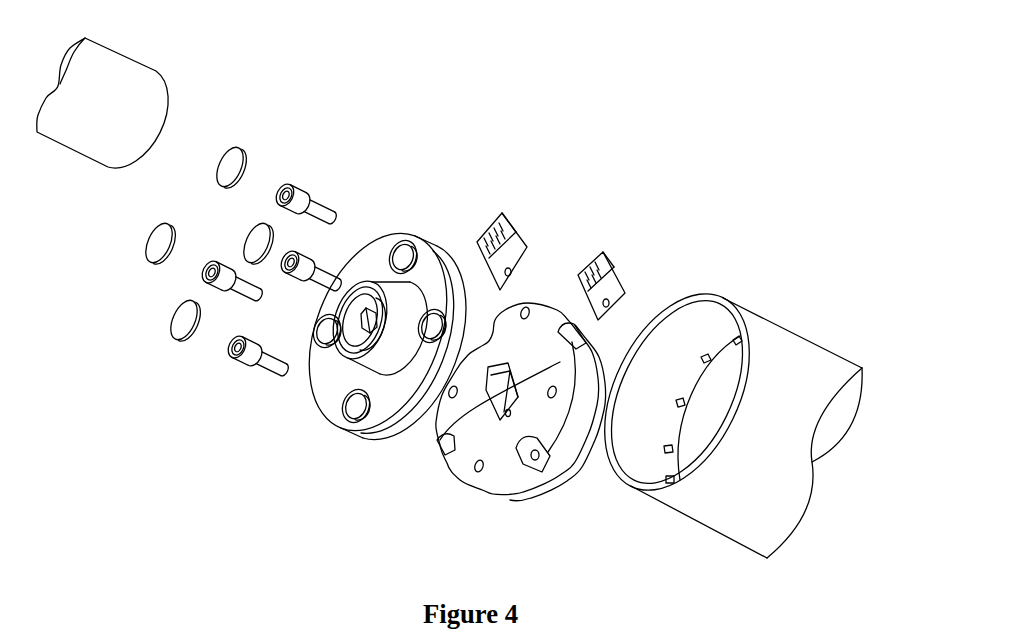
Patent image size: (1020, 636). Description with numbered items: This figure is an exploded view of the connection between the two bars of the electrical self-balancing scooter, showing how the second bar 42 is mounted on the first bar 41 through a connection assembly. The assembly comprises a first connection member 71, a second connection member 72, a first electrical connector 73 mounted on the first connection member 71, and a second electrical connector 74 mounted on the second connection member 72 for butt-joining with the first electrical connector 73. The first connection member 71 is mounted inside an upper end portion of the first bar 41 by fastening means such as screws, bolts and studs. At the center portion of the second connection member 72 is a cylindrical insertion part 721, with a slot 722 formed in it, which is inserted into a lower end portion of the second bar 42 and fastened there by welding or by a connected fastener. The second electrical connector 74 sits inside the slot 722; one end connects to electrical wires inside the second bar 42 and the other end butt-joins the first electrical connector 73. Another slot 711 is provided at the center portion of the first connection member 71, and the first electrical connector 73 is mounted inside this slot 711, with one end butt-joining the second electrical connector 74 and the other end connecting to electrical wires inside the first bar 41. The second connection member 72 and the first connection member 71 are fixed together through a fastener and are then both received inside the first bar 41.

The first bar 41 is at (772, 350).
The second bar 42 is at (128, 77).
The first connection member 71 is at (577, 405).
The slot 711 is at (482, 395).
The second connection member 72 is at (430, 263).
The cylindrical insertion part 721 is at (377, 355).
The slot 722 is at (368, 307).
The first electrical connector 73 is at (612, 258).
The second electrical connector 74 is at (510, 218).